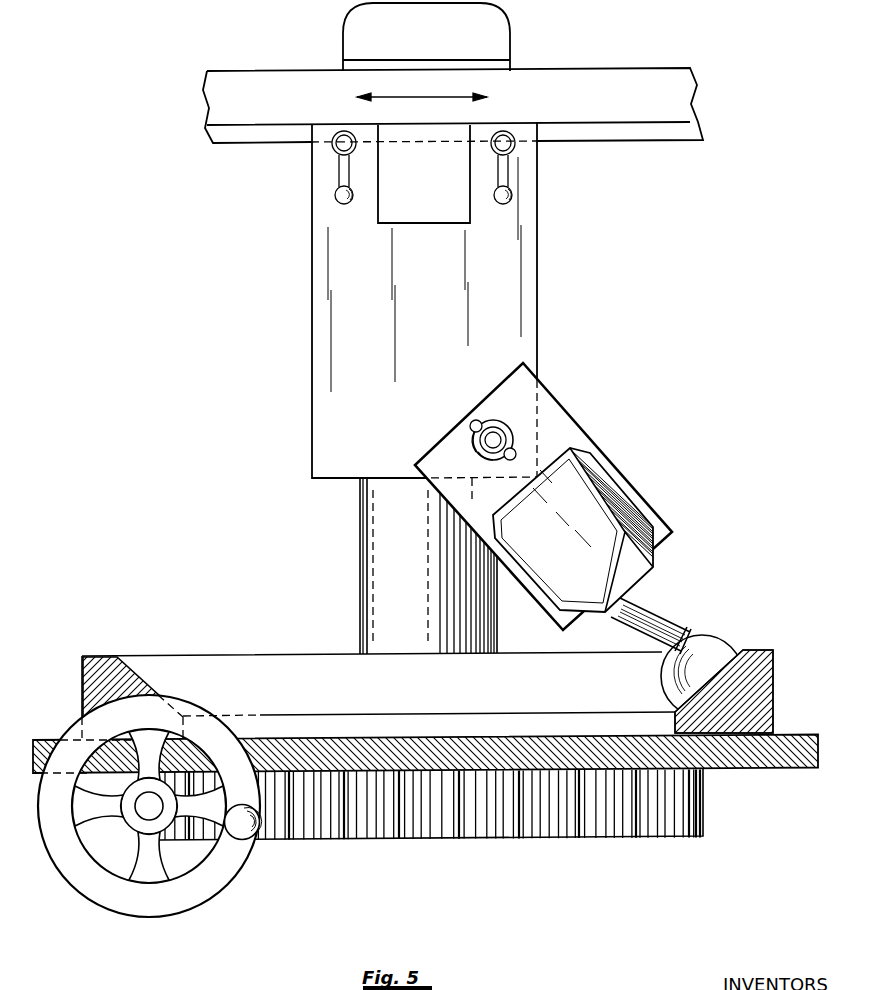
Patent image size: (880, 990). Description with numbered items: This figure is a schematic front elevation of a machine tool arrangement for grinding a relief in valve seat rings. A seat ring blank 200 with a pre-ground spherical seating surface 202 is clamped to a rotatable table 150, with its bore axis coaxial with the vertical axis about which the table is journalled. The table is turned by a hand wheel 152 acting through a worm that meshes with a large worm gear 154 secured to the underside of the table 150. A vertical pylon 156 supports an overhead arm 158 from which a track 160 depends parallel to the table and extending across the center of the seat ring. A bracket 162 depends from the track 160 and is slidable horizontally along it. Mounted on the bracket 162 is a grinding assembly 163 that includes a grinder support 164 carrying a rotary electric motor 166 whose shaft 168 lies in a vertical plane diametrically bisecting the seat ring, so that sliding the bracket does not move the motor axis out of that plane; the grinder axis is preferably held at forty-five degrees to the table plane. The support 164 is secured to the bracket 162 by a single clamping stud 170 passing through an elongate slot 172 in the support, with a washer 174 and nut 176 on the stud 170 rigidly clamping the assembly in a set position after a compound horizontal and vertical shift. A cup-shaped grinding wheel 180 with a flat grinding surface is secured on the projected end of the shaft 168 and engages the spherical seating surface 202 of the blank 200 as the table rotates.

The rotatable table 150 is at (42, 740).
The hand wheel 152 is at (240, 861).
The worm gear 154 is at (468, 827).
The vertical pylon 156 is at (385, 571).
The overhead arm 158 is at (357, 30).
The track 160 is at (565, 86).
The bracket 162 is at (523, 287).
The grinding assembly 163 is at (545, 496).
The grinder support 164 is at (562, 435).
The rotary electric motor 166 is at (628, 510).
The motor shaft 168 is at (665, 614).
The clamping stud 170 is at (495, 432).
The elongate slot 172 is at (477, 420).
The washer 174 is at (473, 438).
The nut 176 is at (477, 451).
The cup-shaped grinding wheel 180 is at (729, 650).
The seat ring blank 200 is at (102, 668).
The spherical seating surface 202 is at (183, 668).